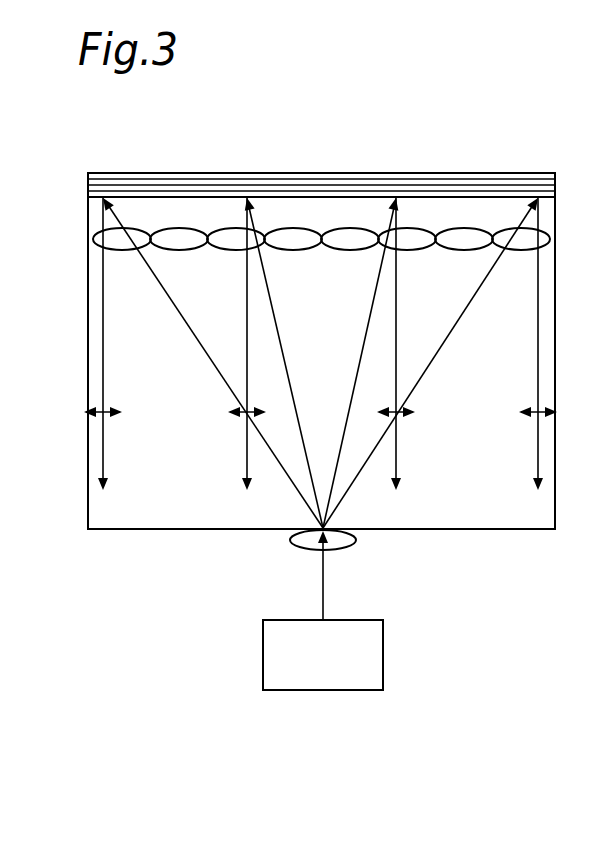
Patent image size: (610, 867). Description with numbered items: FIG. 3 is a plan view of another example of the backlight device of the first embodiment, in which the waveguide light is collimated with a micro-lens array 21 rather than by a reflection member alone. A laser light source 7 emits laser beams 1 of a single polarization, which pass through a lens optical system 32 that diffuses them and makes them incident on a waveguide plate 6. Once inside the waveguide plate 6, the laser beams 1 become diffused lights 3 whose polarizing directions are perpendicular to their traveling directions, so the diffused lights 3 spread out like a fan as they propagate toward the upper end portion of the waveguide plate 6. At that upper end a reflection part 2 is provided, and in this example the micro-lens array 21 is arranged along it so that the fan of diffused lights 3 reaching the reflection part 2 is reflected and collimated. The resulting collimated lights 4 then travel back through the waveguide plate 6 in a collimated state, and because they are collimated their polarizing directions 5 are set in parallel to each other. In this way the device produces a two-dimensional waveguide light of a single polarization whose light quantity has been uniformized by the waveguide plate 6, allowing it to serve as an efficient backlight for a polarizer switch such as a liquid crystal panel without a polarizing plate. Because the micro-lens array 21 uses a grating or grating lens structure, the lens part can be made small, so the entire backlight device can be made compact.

The laser beams 1 is at (323, 597).
The reflection part 2 is at (367, 178).
The diffused lights 3 is at (125, 230).
The collimated lights 4 is at (103, 298).
The polarizing directions 5 is at (90, 405).
The waveguide plate 6 is at (512, 530).
The laser light source 7 is at (383, 645).
The micro-lens array 21 is at (462, 227).
The lens optical system 32 is at (357, 540).